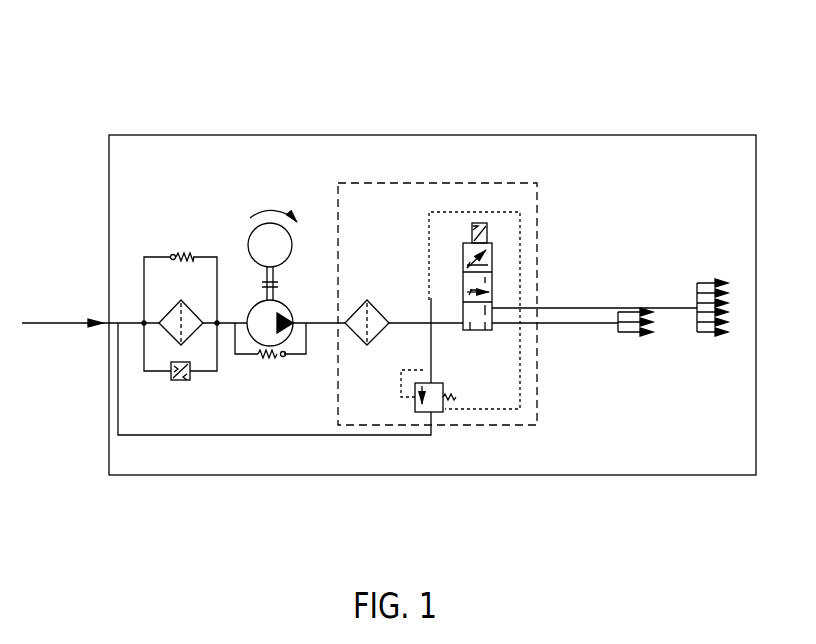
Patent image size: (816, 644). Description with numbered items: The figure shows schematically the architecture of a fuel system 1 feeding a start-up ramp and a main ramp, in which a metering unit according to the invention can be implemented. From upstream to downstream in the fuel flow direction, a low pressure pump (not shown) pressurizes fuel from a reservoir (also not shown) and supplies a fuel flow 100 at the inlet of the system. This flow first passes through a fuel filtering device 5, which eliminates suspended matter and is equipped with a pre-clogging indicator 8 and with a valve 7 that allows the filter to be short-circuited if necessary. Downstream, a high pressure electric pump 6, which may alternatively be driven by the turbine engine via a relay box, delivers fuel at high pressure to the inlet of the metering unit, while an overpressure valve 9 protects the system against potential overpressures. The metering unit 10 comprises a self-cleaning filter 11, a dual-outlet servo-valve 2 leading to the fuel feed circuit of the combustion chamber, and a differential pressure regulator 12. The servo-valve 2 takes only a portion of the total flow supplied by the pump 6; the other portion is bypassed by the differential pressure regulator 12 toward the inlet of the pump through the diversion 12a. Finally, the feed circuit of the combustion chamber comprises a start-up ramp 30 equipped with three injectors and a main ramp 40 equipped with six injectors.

The fuel system 1 is at (125, 118).
The fuel flow 100 is at (64, 337).
The fuel filtering device 5 is at (167, 306).
The valve 7 is at (183, 245).
The pre-clogging indicator 8 is at (181, 385).
The high pressure electric pump 6 is at (265, 205).
The overpressure valve 9 is at (272, 365).
The metering unit 10 is at (425, 180).
The self-cleaning filter 11 is at (363, 297).
The dual-outlet servo-valve 2 is at (490, 240).
The differential pressure regulator 12 is at (436, 416).
The diversion 12a is at (434, 354).
The start-up ramp 30 is at (635, 334).
The main ramp 40 is at (712, 296).